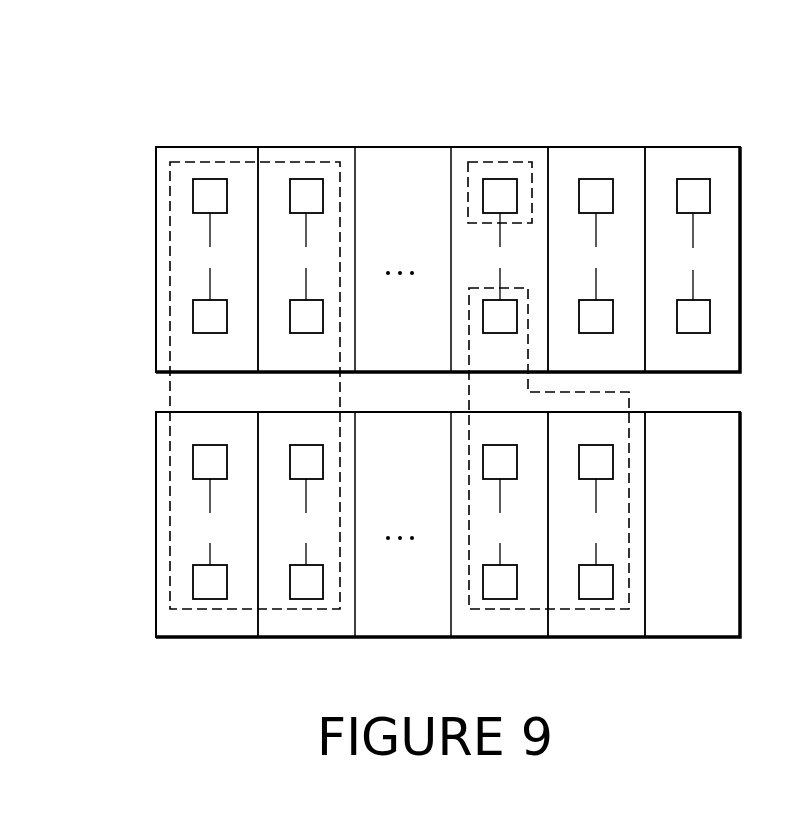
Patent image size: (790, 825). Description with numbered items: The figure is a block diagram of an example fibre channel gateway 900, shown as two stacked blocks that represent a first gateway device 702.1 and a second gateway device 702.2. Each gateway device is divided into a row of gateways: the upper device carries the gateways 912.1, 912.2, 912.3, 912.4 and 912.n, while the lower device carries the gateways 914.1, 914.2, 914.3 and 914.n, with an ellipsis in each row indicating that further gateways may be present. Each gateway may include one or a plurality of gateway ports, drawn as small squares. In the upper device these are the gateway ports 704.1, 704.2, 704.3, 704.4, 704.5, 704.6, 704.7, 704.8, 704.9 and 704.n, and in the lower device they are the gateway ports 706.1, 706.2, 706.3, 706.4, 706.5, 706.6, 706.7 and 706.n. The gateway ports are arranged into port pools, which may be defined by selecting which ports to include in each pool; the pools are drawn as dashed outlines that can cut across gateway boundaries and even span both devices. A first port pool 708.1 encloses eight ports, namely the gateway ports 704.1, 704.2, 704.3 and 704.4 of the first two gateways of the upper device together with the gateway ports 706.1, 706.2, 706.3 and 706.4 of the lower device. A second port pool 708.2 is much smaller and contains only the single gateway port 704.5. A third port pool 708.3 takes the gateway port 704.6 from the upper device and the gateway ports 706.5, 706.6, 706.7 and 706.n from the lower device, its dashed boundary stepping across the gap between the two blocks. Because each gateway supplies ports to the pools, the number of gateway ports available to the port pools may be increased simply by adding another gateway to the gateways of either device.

The fibre channel gateway 900 is at (297, 100).
The gateway device 702.1 is at (156, 177).
The gateway device 702.2 is at (156, 442).
The gateway port 704.1 is at (210, 214).
The gateway port 704.2 is at (210, 297).
The gateway port 704.3 is at (306, 215).
The gateway port 704.4 is at (306, 297).
The gateway port 704.5 is at (500, 214).
The gateway port 704.6 is at (500, 297).
The gateway port 704.7 is at (596, 214).
The gateway port 704.8 is at (596, 297).
The gateway port 704.9 is at (693, 216).
The gateway port 704.n is at (693, 298).
The gateway port 706.1 is at (210, 481).
The gateway port 706.2 is at (210, 561).
The gateway port 706.3 is at (306, 481).
The gateway port 706.4 is at (306, 561).
The gateway port 706.5 is at (500, 480).
The gateway port 706.6 is at (500, 560).
The gateway port 706.7 is at (596, 480).
The gateway port 706.n is at (596, 560).
The first port pool 708.1 is at (169, 273).
The second port pool 708.2 is at (467, 199).
The third port pool 708.3 is at (469, 365).
The gateway 912.1 is at (203, 147).
The gateway 912.2 is at (302, 147).
The gateway 912.3 is at (503, 147).
The gateway 912.4 is at (590, 147).
The gateway 912.n is at (696, 147).
The gateway 914.1 is at (204, 638).
The gateway 914.2 is at (300, 638).
The gateway 914.3 is at (503, 638).
The gateway 914.n is at (590, 638).